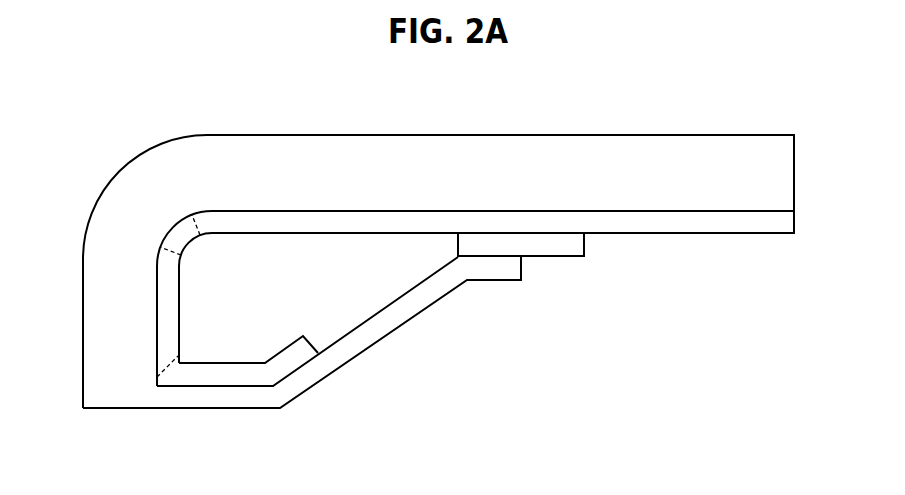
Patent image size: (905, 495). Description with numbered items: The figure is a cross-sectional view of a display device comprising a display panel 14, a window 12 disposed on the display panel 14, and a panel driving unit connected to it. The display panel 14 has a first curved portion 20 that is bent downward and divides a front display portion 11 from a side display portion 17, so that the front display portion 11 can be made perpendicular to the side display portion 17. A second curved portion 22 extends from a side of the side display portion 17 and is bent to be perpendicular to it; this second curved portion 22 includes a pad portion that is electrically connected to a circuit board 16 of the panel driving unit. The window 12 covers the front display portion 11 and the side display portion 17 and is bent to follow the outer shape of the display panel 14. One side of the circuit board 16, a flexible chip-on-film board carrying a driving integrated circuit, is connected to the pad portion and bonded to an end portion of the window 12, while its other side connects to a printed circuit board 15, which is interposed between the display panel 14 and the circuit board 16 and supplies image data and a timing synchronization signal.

The front display portion 11 is at (313, 222).
The window 12 is at (765, 176).
The display panel 14 is at (765, 222).
The printed circuit board 15 is at (552, 247).
The circuit board 16 is at (493, 268).
The side display portion 17 is at (167, 318).
The first curved portion 20 is at (181, 235).
The second curved portion 22 is at (223, 372).